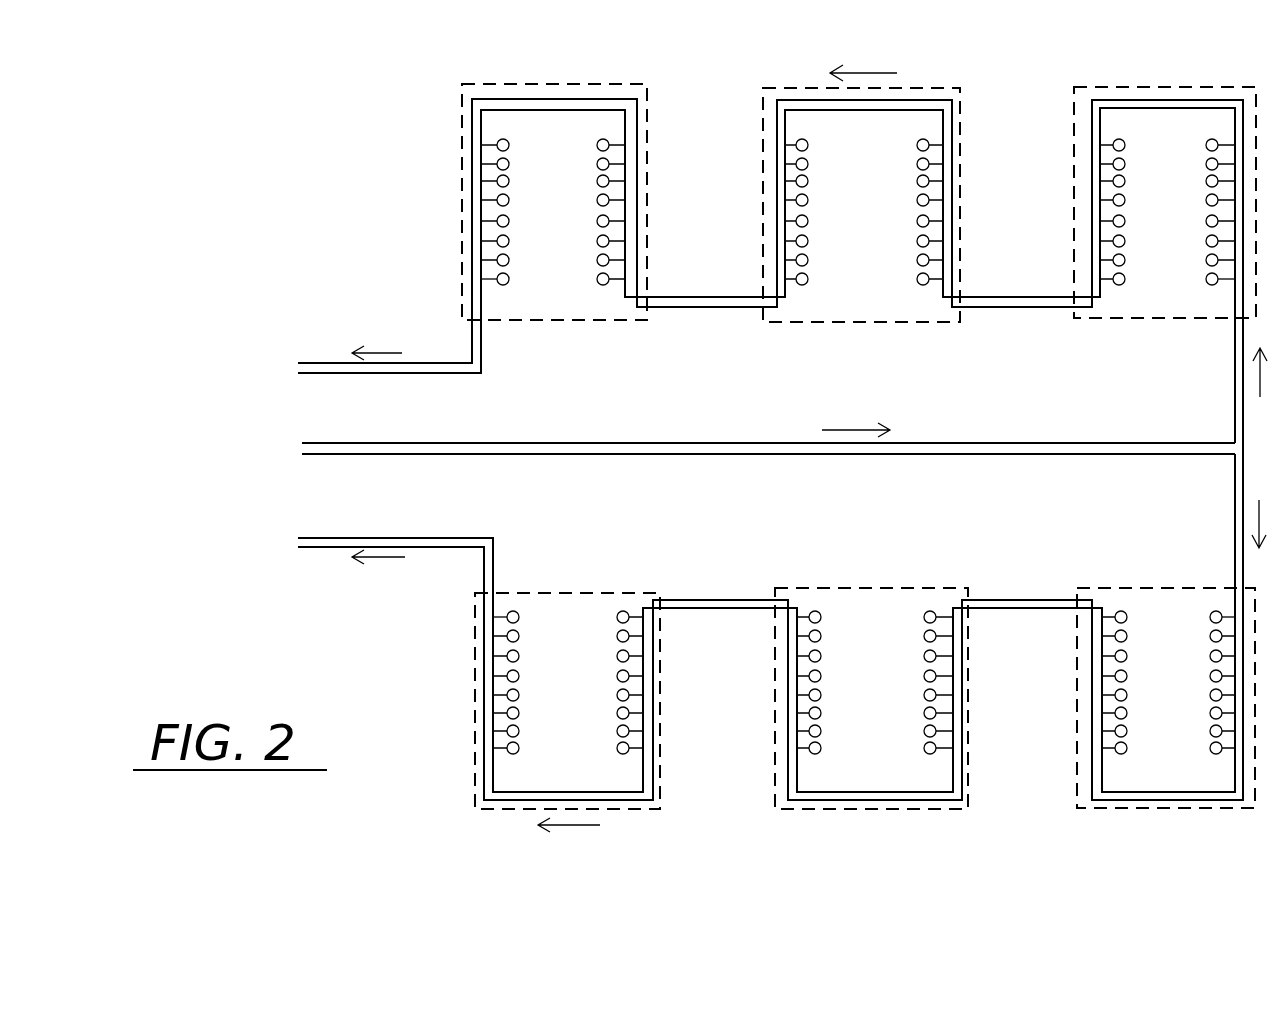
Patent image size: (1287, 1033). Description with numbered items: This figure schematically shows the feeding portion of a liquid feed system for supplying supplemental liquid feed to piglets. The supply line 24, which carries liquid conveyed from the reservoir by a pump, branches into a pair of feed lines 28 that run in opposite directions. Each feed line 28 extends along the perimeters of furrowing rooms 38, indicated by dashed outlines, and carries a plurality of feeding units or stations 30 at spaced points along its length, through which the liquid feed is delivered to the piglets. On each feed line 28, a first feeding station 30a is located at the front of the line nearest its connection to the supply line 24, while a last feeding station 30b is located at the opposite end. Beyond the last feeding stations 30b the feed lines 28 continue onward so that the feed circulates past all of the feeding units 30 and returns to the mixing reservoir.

The supply line 24 is at (651, 443).
The feed lines 28 is at (708, 298).
The feeding units or stations 30 is at (509, 200).
The first feeding station 30a is at (1206, 280).
The last feeding station 30b is at (509, 279).
The furrowing rooms 38 is at (648, 100).